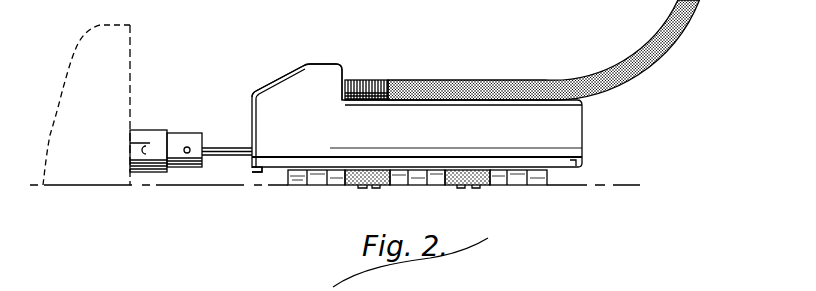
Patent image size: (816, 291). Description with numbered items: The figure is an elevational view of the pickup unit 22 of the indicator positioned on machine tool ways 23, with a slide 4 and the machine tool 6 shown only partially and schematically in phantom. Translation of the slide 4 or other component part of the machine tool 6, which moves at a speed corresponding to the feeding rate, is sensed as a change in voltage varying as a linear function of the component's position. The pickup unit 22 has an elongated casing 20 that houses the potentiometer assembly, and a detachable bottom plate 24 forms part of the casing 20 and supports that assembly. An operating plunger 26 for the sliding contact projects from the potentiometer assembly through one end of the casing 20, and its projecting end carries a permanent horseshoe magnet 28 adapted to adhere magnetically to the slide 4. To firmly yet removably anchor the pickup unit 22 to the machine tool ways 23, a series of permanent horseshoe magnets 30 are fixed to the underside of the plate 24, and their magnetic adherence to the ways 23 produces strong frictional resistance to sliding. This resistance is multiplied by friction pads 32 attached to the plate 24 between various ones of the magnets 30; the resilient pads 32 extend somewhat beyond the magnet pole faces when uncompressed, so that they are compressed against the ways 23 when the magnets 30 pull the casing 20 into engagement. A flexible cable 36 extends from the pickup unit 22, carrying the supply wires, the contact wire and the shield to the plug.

The slide 4 is at (110, 34).
The machine tool 6 is at (134, 73).
The casing 20 is at (563, 133).
The pickup unit 22 is at (266, 77).
The machine tool ways 23 is at (270, 181).
The bottom plate 24 is at (575, 167).
The operating plunger 26 is at (227, 156).
The permanent horseshoe magnet 28 is at (156, 131).
The permanent horseshoe magnets 30 is at (297, 187).
The friction pads 32 is at (367, 187).
The flexible cable 36 is at (526, 78).